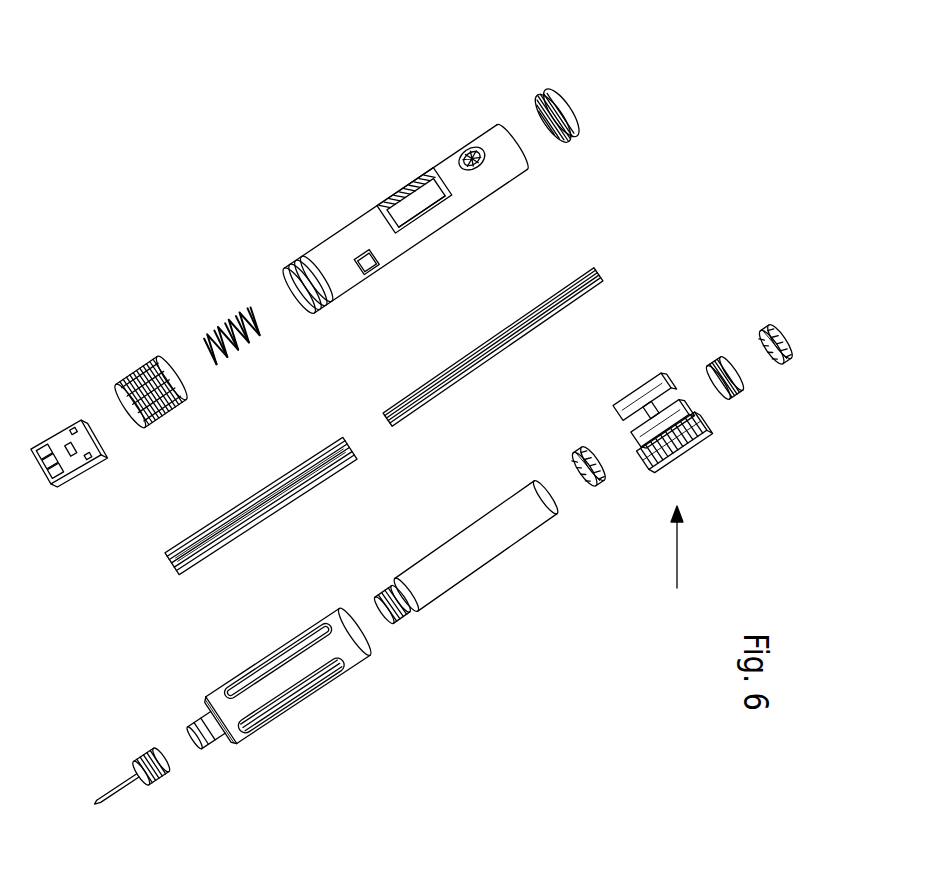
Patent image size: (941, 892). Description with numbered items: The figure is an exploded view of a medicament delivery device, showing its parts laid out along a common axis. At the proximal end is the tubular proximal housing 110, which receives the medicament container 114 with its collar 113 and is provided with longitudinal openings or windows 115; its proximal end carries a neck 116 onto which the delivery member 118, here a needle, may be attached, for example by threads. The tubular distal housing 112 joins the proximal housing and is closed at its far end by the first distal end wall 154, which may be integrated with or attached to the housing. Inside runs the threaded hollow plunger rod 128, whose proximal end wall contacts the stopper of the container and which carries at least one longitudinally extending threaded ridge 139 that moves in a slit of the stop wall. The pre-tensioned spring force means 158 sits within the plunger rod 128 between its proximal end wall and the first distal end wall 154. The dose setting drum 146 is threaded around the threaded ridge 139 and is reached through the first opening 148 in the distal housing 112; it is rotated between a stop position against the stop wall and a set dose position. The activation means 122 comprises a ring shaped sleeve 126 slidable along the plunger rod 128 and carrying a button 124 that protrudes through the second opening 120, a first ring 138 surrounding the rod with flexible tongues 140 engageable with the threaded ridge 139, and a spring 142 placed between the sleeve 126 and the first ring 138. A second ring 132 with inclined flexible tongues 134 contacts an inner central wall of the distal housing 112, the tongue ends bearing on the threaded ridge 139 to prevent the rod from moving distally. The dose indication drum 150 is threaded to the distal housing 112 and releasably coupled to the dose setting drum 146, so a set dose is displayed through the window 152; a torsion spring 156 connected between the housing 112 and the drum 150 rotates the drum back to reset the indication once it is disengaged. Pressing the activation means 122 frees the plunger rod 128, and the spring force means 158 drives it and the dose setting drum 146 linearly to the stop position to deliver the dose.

The tubular proximal housing 110 is at (352, 647).
The tubular distal housing 112 is at (330, 248).
The collar 113 is at (390, 607).
The medicament container 114 is at (183, 745).
The longitudinal openings or windows 115 is at (285, 710).
The neck 116 is at (208, 738).
The delivery member 118 is at (120, 795).
The second opening 120 is at (370, 265).
The activation means 122 is at (676, 564).
The button 124 is at (690, 447).
The ring shaped sleeve 126 is at (668, 405).
The threaded hollow plunger rod 128 is at (210, 535).
The second ring 132 is at (578, 455).
The inclined flexible tongues 134 is at (590, 487).
The first ring 138 is at (785, 358).
The threaded ridge 139 is at (298, 495).
The flexible tongues 140 is at (780, 338).
The spring 142 is at (745, 385).
The dose setting drum 146 is at (72, 428).
The first opening 148 is at (412, 203).
The dose indication drum 150 is at (153, 360).
The window 152 is at (470, 148).
The first distal end wall 154 is at (567, 118).
The torsion spring 156 is at (223, 320).
The spring force means 158 is at (478, 360).